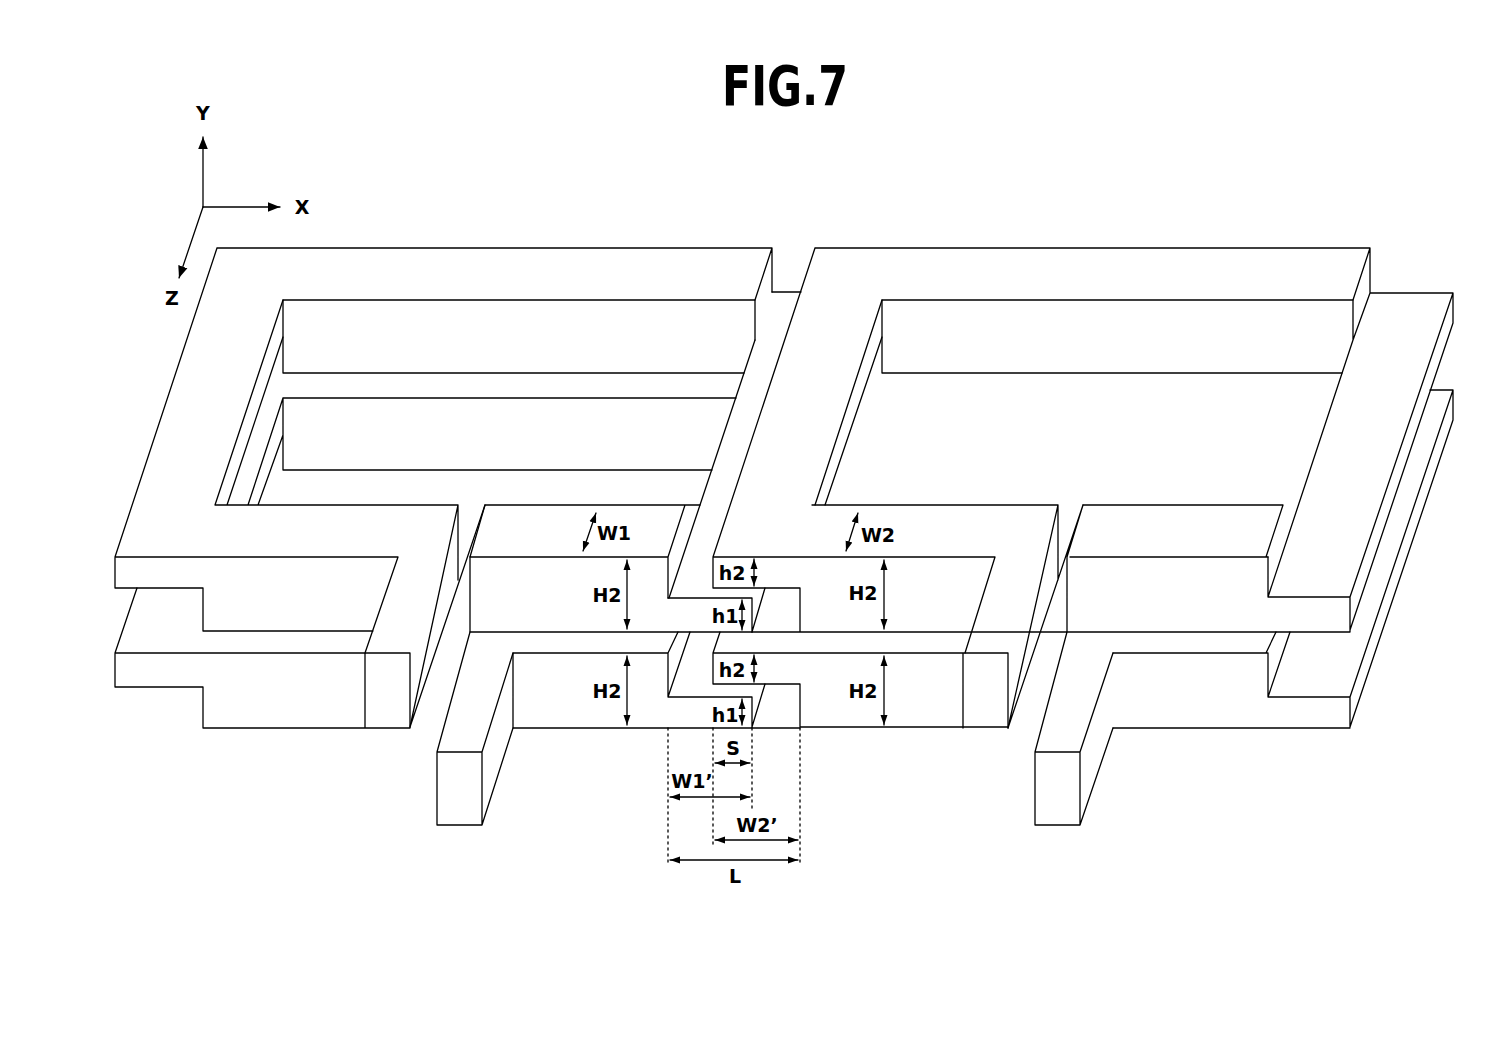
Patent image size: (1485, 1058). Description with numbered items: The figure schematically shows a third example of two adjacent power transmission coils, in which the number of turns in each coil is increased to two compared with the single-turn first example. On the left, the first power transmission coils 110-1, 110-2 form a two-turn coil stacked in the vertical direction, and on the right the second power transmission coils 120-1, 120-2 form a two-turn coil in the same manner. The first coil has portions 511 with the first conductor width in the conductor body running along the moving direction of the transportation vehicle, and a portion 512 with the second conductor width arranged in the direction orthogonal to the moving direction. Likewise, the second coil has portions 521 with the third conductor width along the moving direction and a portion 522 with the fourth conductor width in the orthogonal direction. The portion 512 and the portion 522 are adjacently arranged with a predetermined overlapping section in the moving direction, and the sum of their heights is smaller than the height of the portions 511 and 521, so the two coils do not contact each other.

The first power transmission coil 110-1 is at (386, 242).
The first power transmission coil 110-2 is at (306, 735).
The second power transmission coil 120-1 is at (969, 242).
The second power transmission coil 120-2 is at (909, 735).
The portions with the first conductor width 511 is at (545, 268).
The portion with the second conductor width 512 is at (733, 440).
The portions with the third conductor width 521 is at (1125, 267).
The portion with the fourth conductor width 522 is at (810, 432).